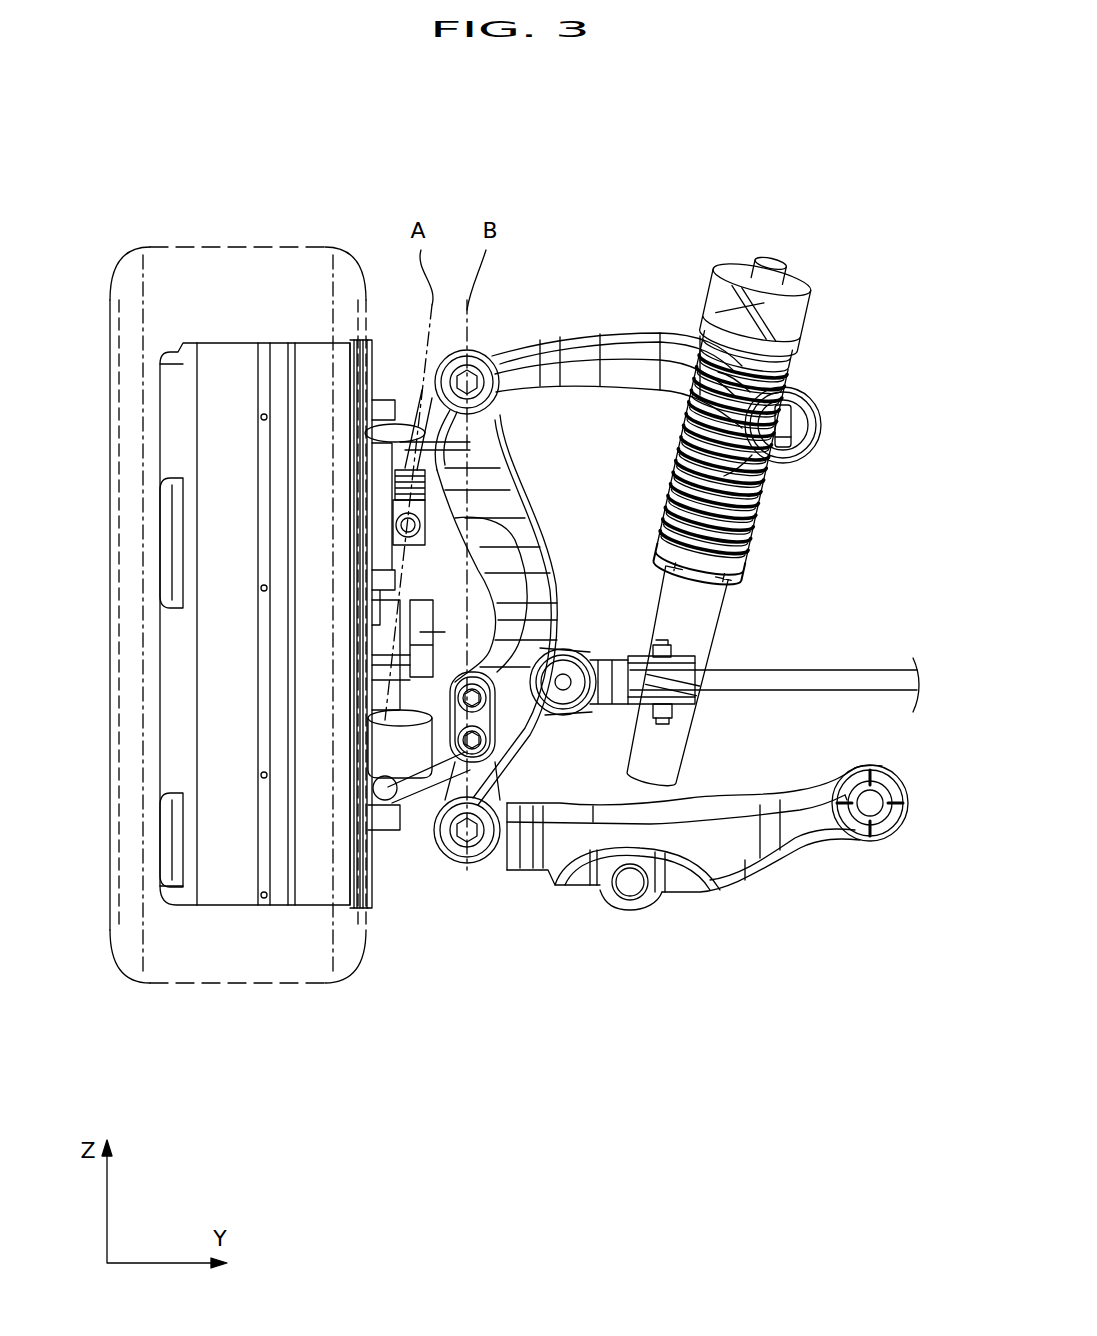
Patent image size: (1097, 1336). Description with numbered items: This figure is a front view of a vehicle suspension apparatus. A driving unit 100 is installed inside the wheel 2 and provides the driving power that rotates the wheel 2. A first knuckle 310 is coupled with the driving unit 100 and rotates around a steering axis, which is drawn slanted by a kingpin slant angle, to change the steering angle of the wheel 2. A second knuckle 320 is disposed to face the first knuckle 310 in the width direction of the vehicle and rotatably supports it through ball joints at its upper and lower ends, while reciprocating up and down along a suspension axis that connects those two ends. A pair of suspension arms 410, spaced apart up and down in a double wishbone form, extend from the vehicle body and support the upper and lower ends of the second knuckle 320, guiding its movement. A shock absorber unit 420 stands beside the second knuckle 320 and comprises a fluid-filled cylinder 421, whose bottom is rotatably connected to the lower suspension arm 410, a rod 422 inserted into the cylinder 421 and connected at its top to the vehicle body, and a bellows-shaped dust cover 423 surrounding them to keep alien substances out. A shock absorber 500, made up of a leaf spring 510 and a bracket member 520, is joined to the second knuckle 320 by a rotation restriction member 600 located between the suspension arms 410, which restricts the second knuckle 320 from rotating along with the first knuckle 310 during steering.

The wheel 2 is at (211, 272).
The driving unit 100 is at (243, 358).
The first knuckle 310 is at (388, 650).
The second knuckle 320 is at (560, 720).
The suspension arm 410 is at (745, 838).
The shock absorber unit 420 is at (735, 207).
The cylinder 421 is at (680, 600).
The rod 422 is at (718, 282).
The dust cover 423 is at (688, 380).
The shock absorber 500 is at (818, 585).
The leaf spring 510 is at (815, 687).
The bracket member 520 is at (663, 652).
The rotation restriction member 600 is at (563, 660).